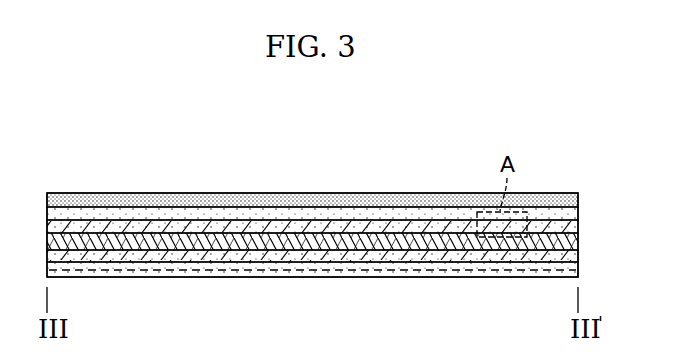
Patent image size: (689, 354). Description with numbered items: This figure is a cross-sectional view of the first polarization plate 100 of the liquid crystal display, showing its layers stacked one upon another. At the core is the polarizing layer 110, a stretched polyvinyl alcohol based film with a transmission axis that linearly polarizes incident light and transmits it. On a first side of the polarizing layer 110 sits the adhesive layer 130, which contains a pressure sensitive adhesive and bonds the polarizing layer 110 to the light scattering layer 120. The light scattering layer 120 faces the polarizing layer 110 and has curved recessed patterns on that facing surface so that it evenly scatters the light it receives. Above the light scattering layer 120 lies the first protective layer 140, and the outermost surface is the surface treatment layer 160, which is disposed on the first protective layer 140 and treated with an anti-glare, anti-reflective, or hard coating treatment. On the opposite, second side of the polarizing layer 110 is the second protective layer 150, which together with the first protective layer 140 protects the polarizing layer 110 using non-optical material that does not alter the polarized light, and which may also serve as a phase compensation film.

The first polarization plate 100 is at (347, 116).
The surface treatment layer 160 is at (573, 200).
The first protective layer 140 is at (573, 213).
The light scattering layer 120 is at (573, 226).
The adhesive layer 130 is at (573, 241).
The polarizing layer 110 is at (573, 256).
The second protective layer 150 is at (573, 270).